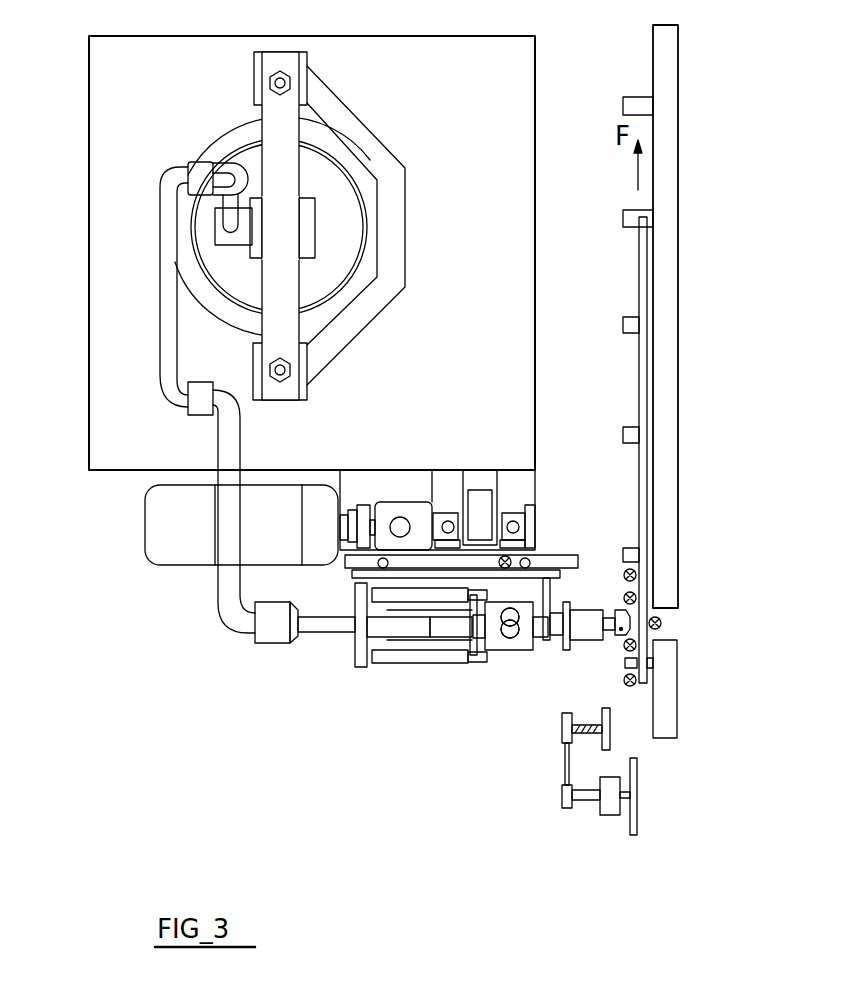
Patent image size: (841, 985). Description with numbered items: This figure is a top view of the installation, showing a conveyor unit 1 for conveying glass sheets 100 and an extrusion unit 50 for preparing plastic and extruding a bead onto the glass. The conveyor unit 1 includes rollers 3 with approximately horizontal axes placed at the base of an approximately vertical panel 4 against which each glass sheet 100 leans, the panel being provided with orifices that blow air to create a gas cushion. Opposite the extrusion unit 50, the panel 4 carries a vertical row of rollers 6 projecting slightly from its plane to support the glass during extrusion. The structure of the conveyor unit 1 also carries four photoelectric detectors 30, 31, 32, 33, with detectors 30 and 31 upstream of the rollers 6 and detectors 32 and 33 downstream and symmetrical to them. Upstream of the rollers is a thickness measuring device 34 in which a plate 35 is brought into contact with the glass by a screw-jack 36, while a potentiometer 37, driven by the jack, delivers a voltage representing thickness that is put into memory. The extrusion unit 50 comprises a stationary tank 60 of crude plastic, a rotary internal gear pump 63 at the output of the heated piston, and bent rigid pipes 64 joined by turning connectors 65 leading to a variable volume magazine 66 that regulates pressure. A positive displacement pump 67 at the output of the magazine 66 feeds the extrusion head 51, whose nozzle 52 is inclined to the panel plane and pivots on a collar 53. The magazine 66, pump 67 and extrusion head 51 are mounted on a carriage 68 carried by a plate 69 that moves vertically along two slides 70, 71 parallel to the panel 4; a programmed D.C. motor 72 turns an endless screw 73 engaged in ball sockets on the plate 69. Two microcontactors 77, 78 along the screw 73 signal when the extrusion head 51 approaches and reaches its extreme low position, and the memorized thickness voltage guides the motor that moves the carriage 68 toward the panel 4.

The conveyor unit 1 is at (689, 496).
The rollers 3 is at (632, 100).
The panel 4 is at (670, 722).
The rollers 6 is at (662, 622).
The detector 30 is at (637, 680).
The detector 31 is at (637, 645).
The detector 32 is at (636, 597).
The detector 33 is at (636, 573).
The thickness measuring device 34 is at (585, 801).
The plate 35 is at (610, 737).
The screw-jack 36 is at (583, 737).
The potentiometer 37 is at (638, 813).
The extrusion unit 50 is at (187, 623).
The extrusion head 51 is at (583, 653).
The nozzle 52 is at (620, 610).
The collar 53 is at (570, 603).
The tank 60 is at (335, 183).
The rotary internal gear pump 63 is at (307, 223).
The bent rigid pipes 64 is at (163, 328).
The turning connectors 65 is at (197, 402).
The variable volume magazine 66 is at (382, 668).
The positive displacement pump 67 is at (481, 683).
The carriage 68 is at (563, 570).
The plate 69 is at (548, 556).
The slide 70 is at (448, 521).
The slide 71 is at (513, 521).
The motor 72 is at (162, 525).
The endless screw 73 is at (400, 517).
The microcontactor 77 is at (503, 650).
The microcontactor 78 is at (507, 650).
The glass sheet 100 is at (643, 268).